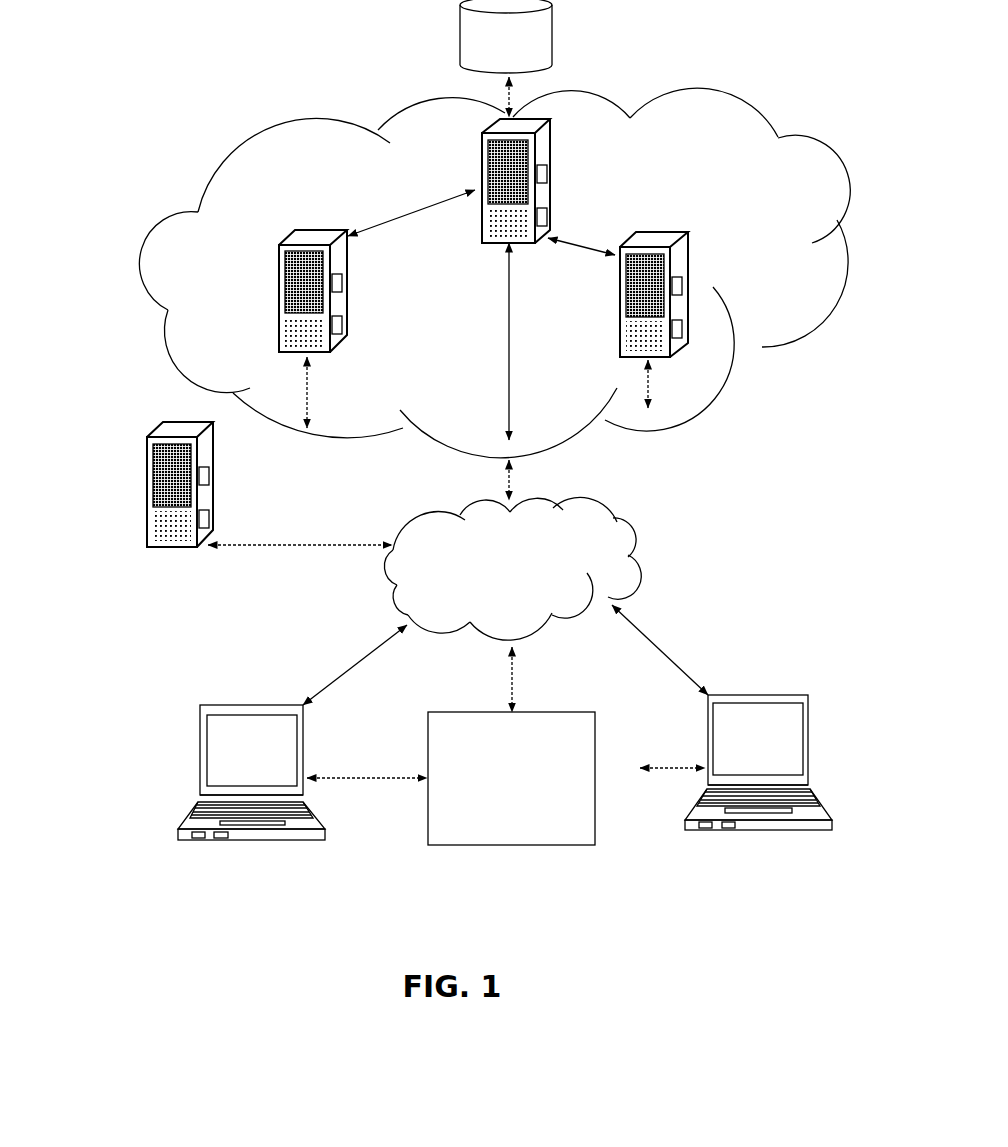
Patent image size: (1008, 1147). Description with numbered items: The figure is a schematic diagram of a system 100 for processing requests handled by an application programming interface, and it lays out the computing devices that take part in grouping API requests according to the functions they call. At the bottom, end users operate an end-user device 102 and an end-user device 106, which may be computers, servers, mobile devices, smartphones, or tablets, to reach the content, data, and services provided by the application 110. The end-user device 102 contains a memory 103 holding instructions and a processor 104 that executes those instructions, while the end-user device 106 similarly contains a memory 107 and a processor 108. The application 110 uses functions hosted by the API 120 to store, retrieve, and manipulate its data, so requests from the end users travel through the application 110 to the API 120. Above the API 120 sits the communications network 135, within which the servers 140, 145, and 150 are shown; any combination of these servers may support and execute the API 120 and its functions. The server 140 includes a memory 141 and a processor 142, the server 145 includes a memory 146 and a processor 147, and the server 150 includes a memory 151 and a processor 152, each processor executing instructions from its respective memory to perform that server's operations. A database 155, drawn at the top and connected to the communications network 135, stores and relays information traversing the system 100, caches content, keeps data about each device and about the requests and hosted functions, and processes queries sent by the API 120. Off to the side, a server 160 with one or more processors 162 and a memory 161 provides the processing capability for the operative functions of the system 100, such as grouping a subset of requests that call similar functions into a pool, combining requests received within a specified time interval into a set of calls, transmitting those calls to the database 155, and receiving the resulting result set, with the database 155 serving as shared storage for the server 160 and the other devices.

The system 100 is at (502, 865).
The end-user device 102 is at (200, 745).
The memory 103 is at (198, 840).
The processor 104 is at (221, 840).
The end-user device 106 is at (780, 830).
The memory 107 is at (705, 830).
The processor 108 is at (728, 830).
The application 110 is at (570, 845).
The application programming interface 120 is at (370, 570).
The communications network 135 is at (168, 306).
The server 140 is at (482, 156).
The memory 141 is at (548, 174).
The processor 142 is at (548, 216).
The server 145 is at (279, 265).
The memory 146 is at (343, 283).
The processor 147 is at (343, 325).
The server 150 is at (688, 253).
The memory 151 is at (683, 286).
The processor 152 is at (683, 329).
The database 155 is at (506, 36).
The server 160 is at (147, 458).
The memory 161 is at (210, 518).
The processors 162 is at (210, 477).